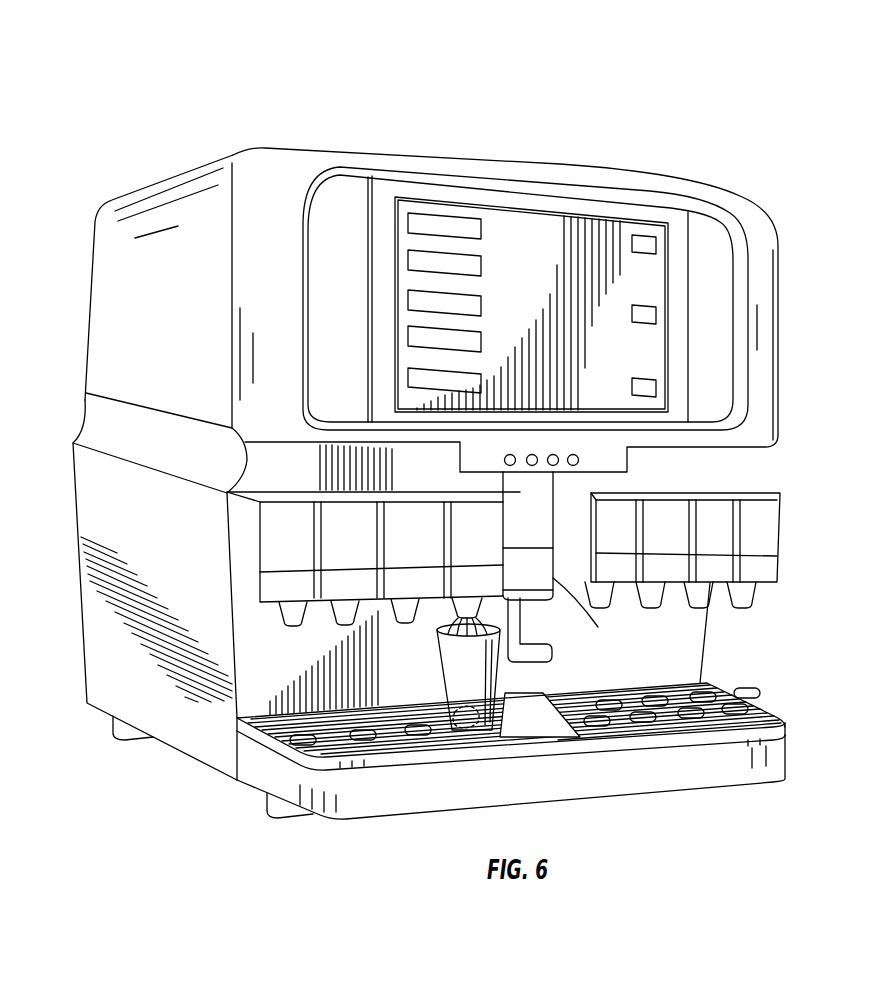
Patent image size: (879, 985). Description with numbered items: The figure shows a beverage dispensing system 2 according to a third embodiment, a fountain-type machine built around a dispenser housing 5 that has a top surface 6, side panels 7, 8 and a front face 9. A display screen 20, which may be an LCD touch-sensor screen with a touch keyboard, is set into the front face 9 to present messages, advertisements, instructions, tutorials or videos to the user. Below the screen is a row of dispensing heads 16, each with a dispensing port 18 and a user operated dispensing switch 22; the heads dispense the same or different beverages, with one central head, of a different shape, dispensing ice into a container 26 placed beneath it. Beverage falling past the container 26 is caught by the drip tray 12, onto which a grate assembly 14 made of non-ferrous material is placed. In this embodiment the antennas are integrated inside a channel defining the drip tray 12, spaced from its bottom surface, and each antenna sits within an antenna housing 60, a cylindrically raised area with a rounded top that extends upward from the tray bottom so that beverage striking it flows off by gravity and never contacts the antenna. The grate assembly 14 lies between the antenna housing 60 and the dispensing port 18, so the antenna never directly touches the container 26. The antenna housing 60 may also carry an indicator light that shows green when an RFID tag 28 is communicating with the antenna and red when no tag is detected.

The beverage dispensing system 2 is at (280, 84).
The dispenser housing 5 is at (83, 468).
The top surface 6 is at (191, 170).
The side panel 7 is at (88, 593).
The side panel 8 is at (780, 317).
The front face 9 is at (277, 172).
The drip tray 12 is at (788, 763).
The grate assembly 14 is at (788, 729).
The dispensing head 16 is at (517, 503).
The dispensing port 18 is at (293, 627).
The display screen 20 is at (523, 220).
The user operated dispensing switch 22 is at (533, 570).
The container 26 is at (500, 686).
The RFID tag 28 is at (483, 718).
The antenna housing 60 is at (310, 752).